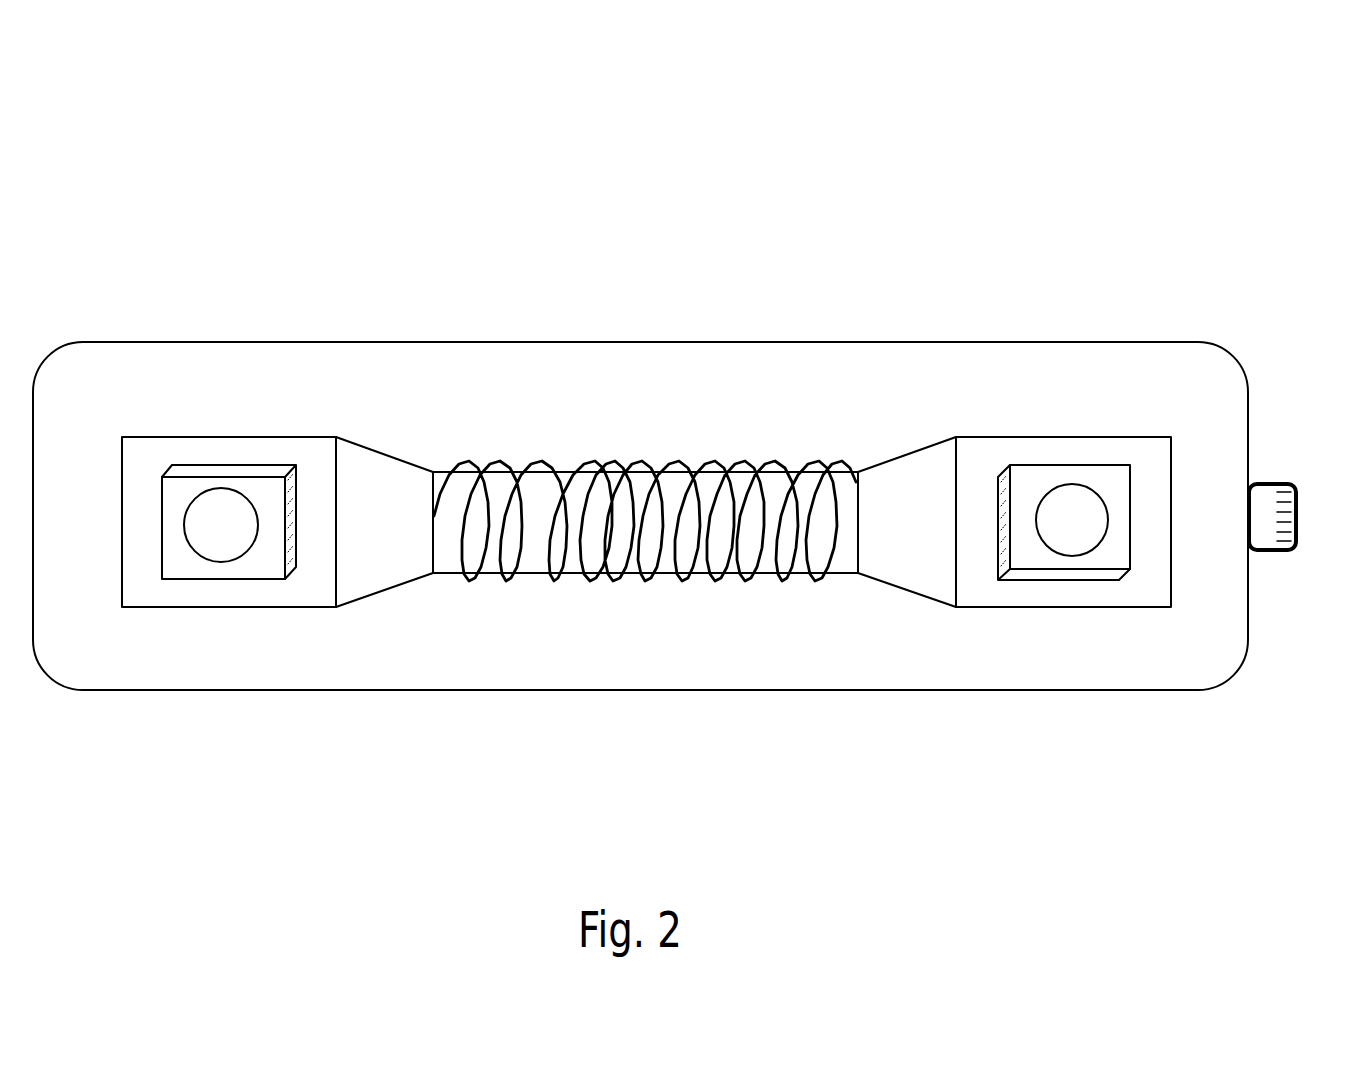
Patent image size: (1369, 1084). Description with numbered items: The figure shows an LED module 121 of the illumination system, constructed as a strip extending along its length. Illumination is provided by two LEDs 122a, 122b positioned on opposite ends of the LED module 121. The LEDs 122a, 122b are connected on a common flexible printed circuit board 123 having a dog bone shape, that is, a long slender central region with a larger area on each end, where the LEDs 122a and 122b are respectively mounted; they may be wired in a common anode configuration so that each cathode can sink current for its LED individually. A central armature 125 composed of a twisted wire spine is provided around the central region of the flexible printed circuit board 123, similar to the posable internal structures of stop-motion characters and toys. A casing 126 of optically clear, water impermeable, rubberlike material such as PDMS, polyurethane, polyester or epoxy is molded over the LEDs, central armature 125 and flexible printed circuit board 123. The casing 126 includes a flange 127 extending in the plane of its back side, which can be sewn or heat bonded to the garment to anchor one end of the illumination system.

The LED module 121 is at (123, 43).
The LED 122a is at (252, 495).
The LED 122b is at (1103, 480).
The flexible printed circuit board 123 is at (977, 587).
The central armature 125 is at (627, 483).
The casing 126 is at (838, 342).
The flange 127 is at (1297, 537).